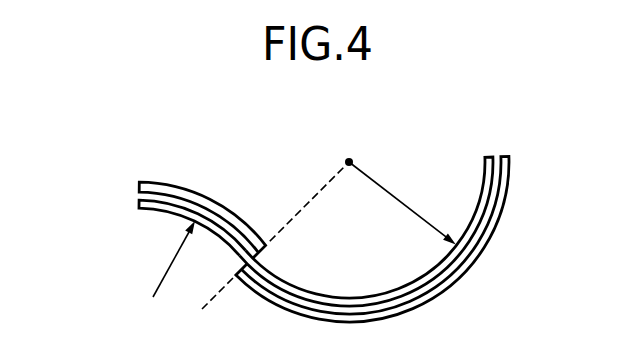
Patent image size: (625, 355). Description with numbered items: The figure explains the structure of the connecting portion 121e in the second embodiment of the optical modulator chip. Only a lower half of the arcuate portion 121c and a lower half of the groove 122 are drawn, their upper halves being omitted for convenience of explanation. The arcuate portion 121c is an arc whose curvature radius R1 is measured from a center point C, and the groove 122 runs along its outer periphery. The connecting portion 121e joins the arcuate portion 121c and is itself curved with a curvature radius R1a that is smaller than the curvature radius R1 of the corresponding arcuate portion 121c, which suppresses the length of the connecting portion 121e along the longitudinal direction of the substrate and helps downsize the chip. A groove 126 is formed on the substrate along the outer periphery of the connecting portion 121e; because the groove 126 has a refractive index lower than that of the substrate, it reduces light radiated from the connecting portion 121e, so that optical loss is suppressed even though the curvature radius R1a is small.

The connecting portion 121e is at (157, 209).
The arcuate portion 121c is at (493, 180).
The groove 126 is at (184, 186).
The groove 122 is at (502, 210).
The center of curvature C is at (347, 162).
The curvature radius of arcuate portion R1 is at (402, 203).
The curvature radius of connecting portion R1a is at (160, 259).